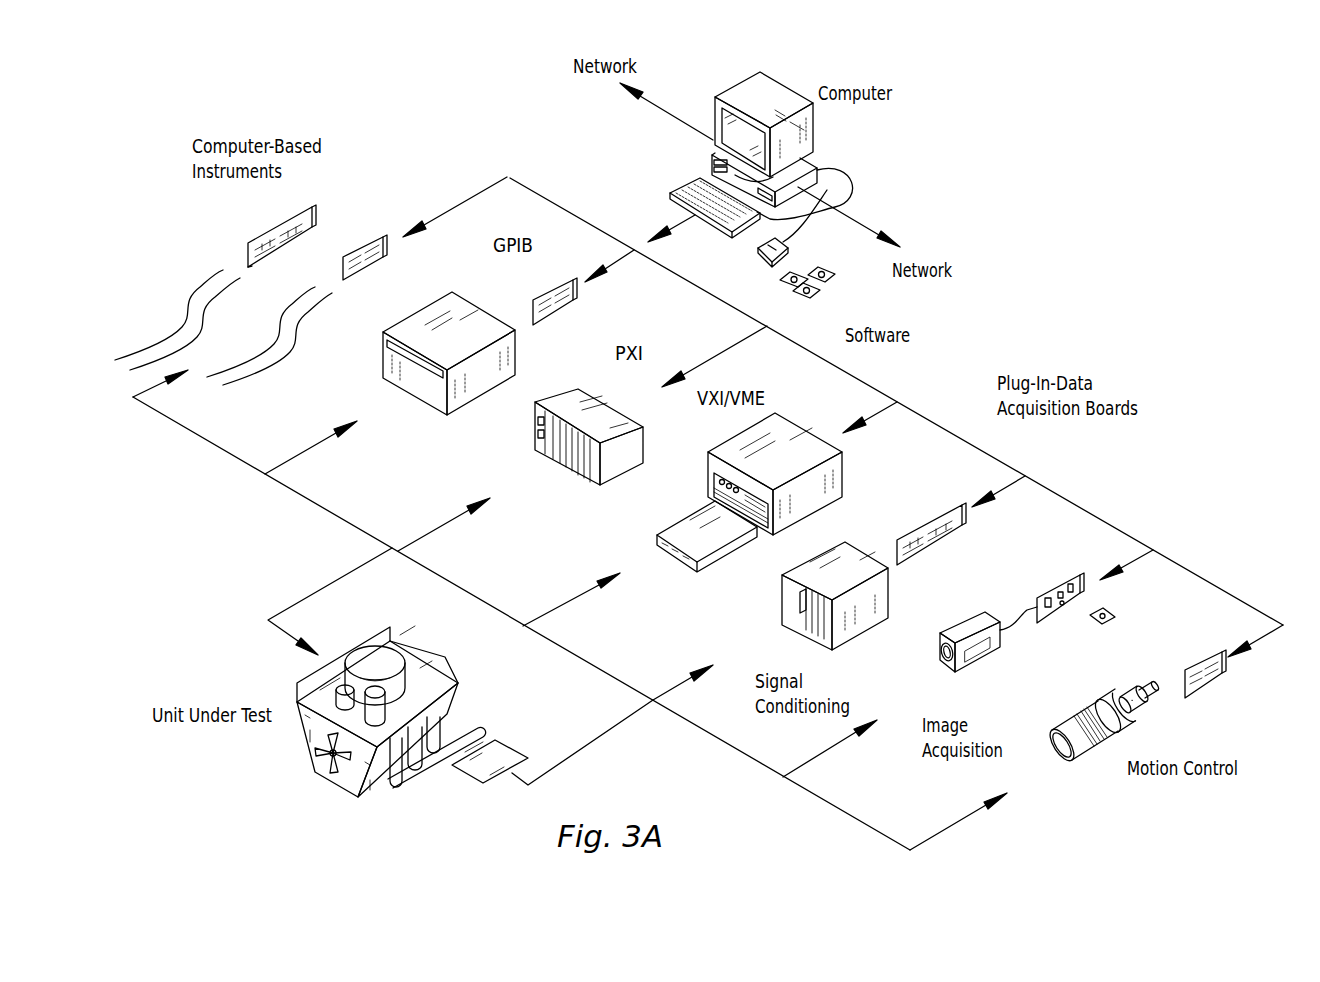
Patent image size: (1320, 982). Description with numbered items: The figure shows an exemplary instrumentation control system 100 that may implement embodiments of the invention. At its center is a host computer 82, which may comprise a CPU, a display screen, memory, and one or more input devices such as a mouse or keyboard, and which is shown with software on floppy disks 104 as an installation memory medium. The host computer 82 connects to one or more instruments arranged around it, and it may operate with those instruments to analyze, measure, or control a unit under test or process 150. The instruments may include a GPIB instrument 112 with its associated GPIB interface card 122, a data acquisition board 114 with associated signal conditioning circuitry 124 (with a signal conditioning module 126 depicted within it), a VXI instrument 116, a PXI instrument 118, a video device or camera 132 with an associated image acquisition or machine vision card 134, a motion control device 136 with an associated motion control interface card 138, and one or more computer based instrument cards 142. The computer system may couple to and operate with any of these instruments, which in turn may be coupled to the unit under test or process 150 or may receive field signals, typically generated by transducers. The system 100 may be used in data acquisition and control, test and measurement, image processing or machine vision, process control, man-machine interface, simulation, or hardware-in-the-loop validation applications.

The host computer 82 is at (783, 92).
The instrumentation control system 100 is at (1060, 193).
The floppy disks 104 is at (812, 293).
The GPIB instrument 112 is at (417, 323).
The data acquisition board 114 is at (950, 507).
The VXI instrument 116 is at (745, 447).
The PXI instrument 118 is at (593, 405).
The GPIB interface card 122 is at (543, 292).
The signal conditioning circuitry 124 is at (805, 604).
The signal conditioning module 126 is at (808, 623).
The video device or camera 132 is at (970, 662).
The image acquisition card 134 is at (1053, 587).
The motion control device 136 is at (1100, 748).
The motion control interface card 138 is at (1207, 685).
The computer based instrument cards 142 is at (257, 232).
The unit under test or process 150 is at (310, 723).